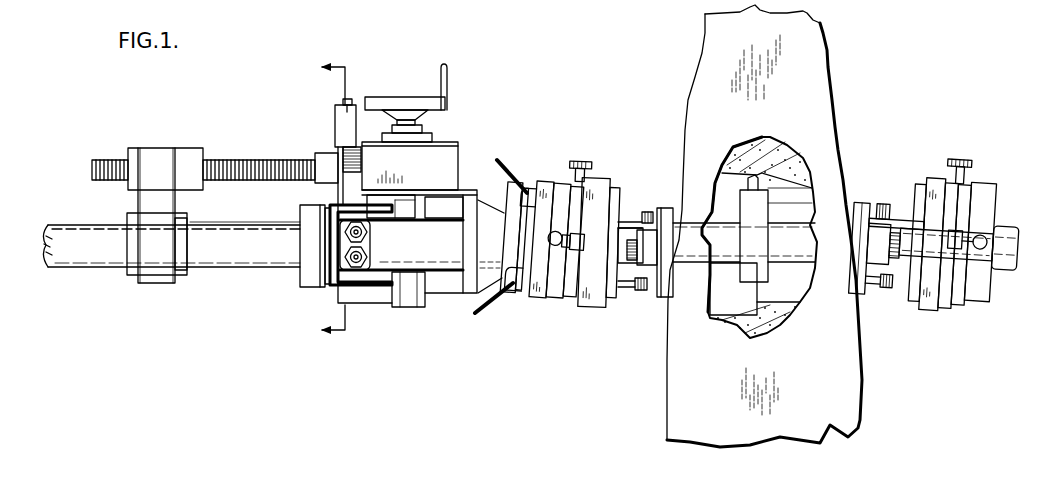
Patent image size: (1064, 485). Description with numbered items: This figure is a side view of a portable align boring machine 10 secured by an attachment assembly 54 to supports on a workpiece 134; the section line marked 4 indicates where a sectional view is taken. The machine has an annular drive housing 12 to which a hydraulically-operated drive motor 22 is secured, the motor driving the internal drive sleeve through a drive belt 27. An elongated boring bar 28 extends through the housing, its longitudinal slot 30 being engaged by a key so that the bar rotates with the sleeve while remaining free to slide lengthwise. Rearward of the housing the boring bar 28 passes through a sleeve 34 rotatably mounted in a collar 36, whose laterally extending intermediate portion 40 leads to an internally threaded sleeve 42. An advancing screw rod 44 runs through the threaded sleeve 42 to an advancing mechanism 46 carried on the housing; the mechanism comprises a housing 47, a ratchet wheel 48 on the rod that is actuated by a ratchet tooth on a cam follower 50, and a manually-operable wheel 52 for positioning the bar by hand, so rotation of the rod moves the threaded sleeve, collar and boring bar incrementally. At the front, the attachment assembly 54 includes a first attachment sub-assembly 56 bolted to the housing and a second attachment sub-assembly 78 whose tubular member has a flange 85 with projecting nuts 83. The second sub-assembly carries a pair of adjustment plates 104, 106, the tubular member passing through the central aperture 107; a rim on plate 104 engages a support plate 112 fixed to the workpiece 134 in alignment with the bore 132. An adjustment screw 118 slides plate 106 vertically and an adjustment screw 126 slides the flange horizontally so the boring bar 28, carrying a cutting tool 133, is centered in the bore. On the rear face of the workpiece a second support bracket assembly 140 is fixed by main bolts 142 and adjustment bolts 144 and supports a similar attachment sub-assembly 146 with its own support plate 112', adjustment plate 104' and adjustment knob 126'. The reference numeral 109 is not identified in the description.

The section line 4- 4 is at (320, 200).
The portable align boring machine 10 is at (391, 82).
The annular drive housing 12 is at (444, 287).
The hydraulically-operated drive motor 22 is at (410, 258).
The drive belt 27 is at (316, 279).
The boring bar 28 is at (98, 258).
The longitudinal slot 30 is at (258, 229).
The sleeve 34 is at (189, 273).
The collar 36 is at (158, 276).
The laterally extending intermediate portion 40 is at (150, 197).
The internally threaded sleeve 42 is at (190, 156).
The advancing screw rod 44 is at (249, 168).
The advancing mechanism 46 is at (452, 128).
The housing 47 is at (456, 146).
The ratchet wheel 48 is at (345, 152).
The cam follower 50 is at (338, 120).
The manually-operable wheel 52 is at (420, 97).
The attachment assembly 54 is at (730, 237).
The first attachment sub-assembly 56 is at (491, 199).
The second attachment sub-assembly 78 is at (553, 178).
The nuts 83 is at (527, 196).
The flange 85 is at (512, 298).
The adjustment plate 104 is at (553, 278).
The adjustment plate 106 is at (560, 298).
The central aperture 107 is at (645, 266).
The flange 109 is at (660, 297).
The support plate 112 is at (631, 227).
The adjustment screw 118 is at (581, 163).
The adjustment screw 126 is at (500, 233).
The bore 132 is at (722, 318).
The cutting tool 133 is at (768, 268).
The workpiece 134 is at (710, 62).
The second support bracket assembly 140 is at (946, 233).
The main bolts 142 is at (905, 255).
The adjustment bolts 144 is at (875, 206).
The attachment sub-assembly 146 is at (978, 170).
The adjustment knob 126' is at (972, 143).
The support plate 112' is at (951, 273).
The adjustment plate 104' is at (992, 271).